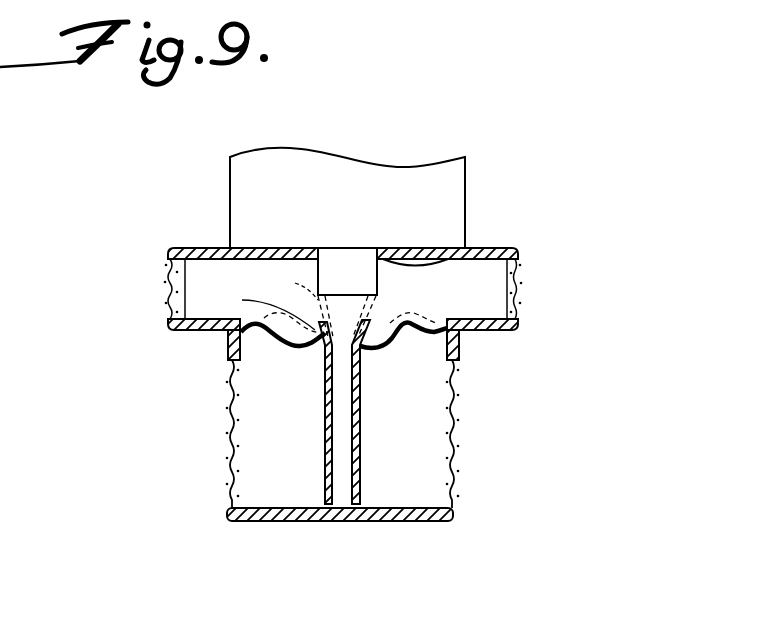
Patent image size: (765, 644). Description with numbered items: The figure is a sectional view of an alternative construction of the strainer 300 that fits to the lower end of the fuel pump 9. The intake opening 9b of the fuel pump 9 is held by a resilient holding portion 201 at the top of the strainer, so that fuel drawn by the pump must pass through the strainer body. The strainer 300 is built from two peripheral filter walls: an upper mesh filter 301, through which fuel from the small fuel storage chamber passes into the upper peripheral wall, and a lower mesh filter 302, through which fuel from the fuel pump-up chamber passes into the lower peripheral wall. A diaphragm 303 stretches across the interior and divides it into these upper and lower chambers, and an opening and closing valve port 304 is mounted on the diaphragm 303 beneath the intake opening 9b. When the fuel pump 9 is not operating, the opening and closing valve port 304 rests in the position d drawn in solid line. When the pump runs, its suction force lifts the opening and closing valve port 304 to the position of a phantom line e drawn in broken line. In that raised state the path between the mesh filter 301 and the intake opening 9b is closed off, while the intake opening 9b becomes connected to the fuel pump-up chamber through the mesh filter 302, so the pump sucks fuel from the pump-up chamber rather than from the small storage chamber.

The fuel pump 9 is at (455, 180).
The intake opening 9b is at (376, 249).
The resilient holding portion 201 is at (511, 248).
The strainer 300 is at (427, 521).
The mesh filter 301 is at (517, 307).
The mesh filter 302 is at (455, 450).
The diaphragm 303 is at (263, 330).
The opening and closing valve port 304 is at (325, 472).
The position d is at (268, 302).
The position of a phantom line e is at (294, 278).